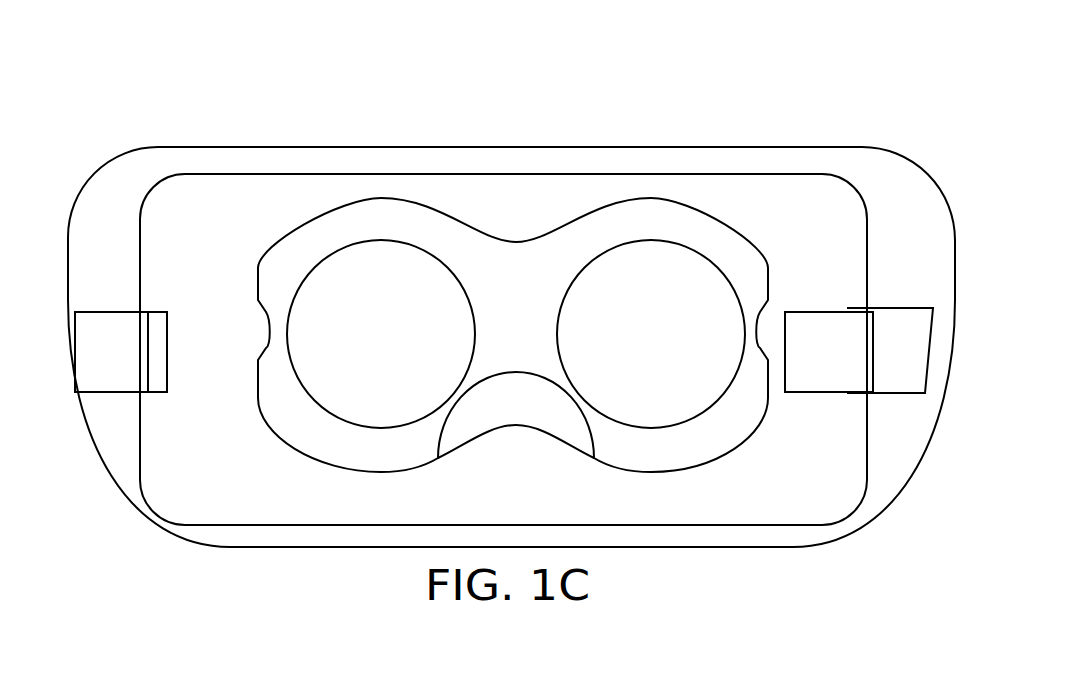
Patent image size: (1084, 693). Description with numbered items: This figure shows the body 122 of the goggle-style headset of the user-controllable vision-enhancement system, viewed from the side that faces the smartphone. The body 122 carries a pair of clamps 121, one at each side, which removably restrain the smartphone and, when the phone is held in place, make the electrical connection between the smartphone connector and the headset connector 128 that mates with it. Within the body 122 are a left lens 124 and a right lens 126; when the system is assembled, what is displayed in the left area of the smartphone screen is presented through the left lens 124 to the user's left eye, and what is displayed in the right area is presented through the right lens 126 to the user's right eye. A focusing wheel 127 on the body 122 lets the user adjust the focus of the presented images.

The clamps 121 is at (120, 392).
The body 122 is at (290, 62).
The left lens 124 is at (381, 240).
The right lens 126 is at (651, 240).
The focusing wheel 127 is at (497, 148).
The connector 128 is at (151, 189).